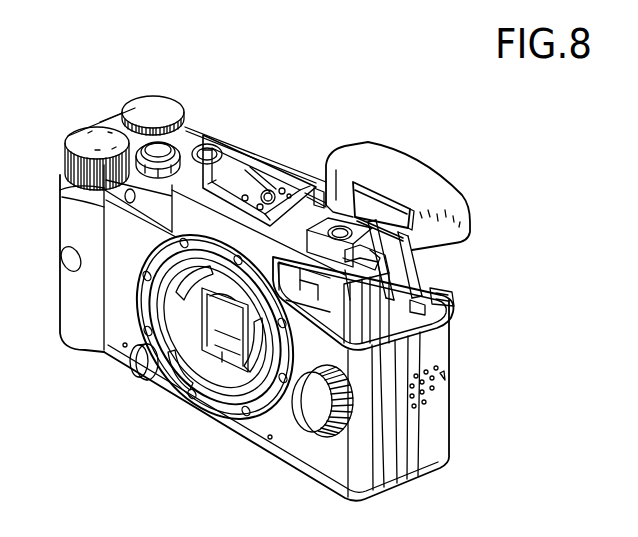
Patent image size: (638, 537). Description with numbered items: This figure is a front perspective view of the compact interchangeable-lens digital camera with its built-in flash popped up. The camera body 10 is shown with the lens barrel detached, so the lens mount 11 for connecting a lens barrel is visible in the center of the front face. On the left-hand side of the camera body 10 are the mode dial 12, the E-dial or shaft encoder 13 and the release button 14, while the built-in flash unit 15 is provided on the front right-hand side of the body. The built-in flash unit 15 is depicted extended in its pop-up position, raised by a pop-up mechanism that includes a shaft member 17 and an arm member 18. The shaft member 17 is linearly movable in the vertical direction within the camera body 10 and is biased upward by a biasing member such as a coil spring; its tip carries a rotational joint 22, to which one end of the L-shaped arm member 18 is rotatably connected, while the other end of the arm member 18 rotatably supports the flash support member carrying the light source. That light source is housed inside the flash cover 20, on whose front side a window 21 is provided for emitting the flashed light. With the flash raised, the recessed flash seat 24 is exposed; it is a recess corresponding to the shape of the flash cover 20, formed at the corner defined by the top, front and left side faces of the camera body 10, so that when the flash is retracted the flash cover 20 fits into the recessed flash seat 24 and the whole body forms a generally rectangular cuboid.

The camera body 10 is at (71, 386).
The lens mount 11 is at (213, 404).
The mode dial 12 is at (74, 136).
The E-dial or shaft encoder 13 is at (150, 100).
The release button 14 is at (165, 147).
The built-in flash unit 15 is at (393, 178).
The shaft member 17 is at (380, 317).
The arm member 18 is at (404, 257).
The flash cover 20 is at (432, 187).
The window 21 is at (363, 205).
The rotational joint 22 is at (442, 297).
The recessed flash seat 24 is at (323, 292).